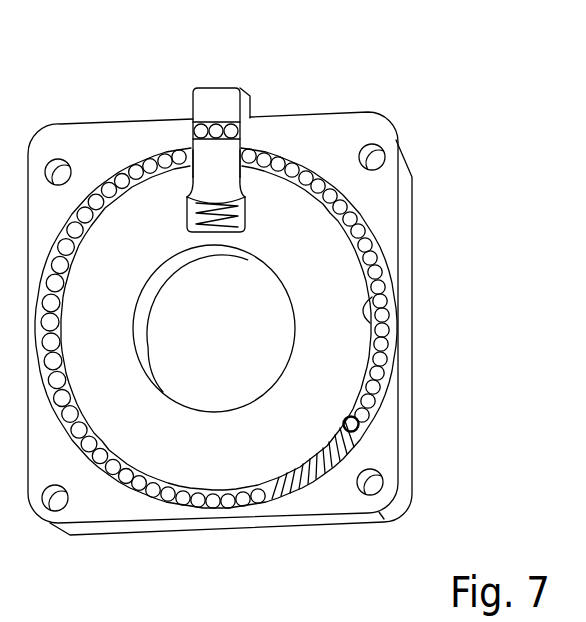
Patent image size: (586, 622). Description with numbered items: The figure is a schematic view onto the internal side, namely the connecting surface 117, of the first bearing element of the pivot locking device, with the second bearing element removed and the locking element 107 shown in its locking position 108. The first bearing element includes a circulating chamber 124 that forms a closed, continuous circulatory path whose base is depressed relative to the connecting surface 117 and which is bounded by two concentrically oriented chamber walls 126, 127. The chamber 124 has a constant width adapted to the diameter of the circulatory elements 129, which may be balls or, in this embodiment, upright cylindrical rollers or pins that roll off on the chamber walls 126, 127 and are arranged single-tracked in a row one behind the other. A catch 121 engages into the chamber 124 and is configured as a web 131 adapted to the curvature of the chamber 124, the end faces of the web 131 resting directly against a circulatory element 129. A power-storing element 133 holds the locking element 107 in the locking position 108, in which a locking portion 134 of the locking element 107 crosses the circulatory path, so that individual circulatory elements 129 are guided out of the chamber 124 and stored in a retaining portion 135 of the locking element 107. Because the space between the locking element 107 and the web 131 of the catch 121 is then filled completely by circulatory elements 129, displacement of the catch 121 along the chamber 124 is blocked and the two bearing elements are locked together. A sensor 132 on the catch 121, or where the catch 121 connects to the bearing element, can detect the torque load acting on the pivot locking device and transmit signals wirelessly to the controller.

The locking element 107 is at (217, 95).
The locking position 108 is at (253, 78).
The connecting surface 117 is at (382, 417).
The catch 121 is at (291, 499).
The circulating chamber 124 is at (390, 252).
The chamber wall 126 is at (121, 177).
The chamber wall 127 is at (365, 316).
The circulatory elements 129 is at (383, 362).
The web 131 is at (318, 466).
The sensor 132 is at (358, 428).
The power-storing element 133 is at (250, 215).
The locking portion 134 is at (217, 147).
The retaining portion 135 is at (254, 116).